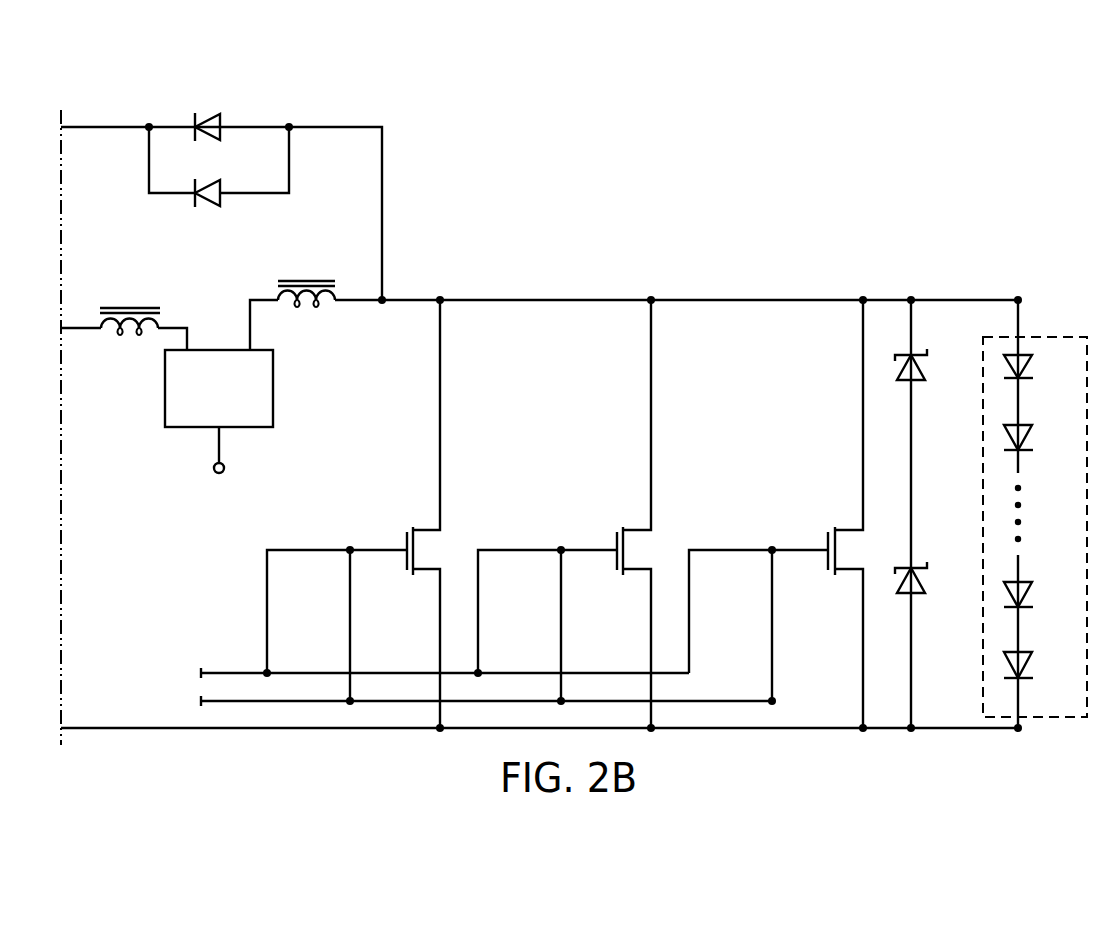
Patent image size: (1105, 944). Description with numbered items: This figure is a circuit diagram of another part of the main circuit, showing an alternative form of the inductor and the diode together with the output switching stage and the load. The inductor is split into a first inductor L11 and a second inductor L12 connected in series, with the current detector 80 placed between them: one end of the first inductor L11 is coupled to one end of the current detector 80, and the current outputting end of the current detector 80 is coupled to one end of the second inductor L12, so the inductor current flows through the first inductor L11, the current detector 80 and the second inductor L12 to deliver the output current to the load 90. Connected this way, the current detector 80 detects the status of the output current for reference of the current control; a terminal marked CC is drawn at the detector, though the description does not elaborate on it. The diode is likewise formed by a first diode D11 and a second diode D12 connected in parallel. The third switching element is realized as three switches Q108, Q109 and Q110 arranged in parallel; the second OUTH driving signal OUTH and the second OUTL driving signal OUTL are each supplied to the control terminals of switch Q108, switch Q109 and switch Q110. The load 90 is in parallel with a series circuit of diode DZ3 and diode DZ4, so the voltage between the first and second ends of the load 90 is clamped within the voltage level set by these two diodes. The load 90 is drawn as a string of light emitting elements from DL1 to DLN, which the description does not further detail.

The first diode D11 is at (233, 119).
The second diode D12 is at (219, 167).
The first inductor L11 is at (124, 313).
The second inductor L12 is at (316, 299).
The current detector 80 is at (273, 390).
The current control terminal CC is at (218, 467).
The switch Q108 is at (353, 514).
The switch Q109 is at (564, 514).
The switch Q110 is at (776, 514).
The second OUTH driving signal OUTH is at (403, 672).
The second OUTL driving signal OUTL is at (447, 700).
The diode DZ3 is at (930, 385).
The diode DZ4 is at (930, 599).
The load 90 is at (1035, 497).
The light emitting diode DL1 is at (1037, 386).
The light emitting diode DLN is at (1041, 641).